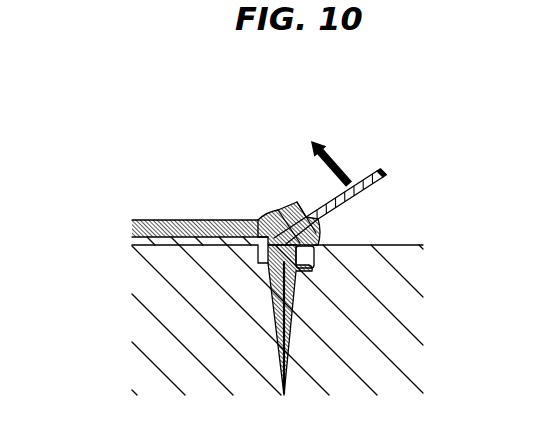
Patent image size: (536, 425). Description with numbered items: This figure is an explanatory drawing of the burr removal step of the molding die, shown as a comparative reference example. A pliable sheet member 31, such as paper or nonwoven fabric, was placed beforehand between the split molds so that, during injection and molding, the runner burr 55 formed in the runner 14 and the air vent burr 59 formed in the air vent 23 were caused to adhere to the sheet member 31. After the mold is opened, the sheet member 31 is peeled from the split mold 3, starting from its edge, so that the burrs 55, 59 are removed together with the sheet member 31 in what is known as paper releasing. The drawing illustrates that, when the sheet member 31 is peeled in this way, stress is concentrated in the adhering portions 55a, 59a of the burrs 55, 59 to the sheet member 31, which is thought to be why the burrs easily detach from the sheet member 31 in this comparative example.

The split mold 3 is at (180, 331).
The runner 14 is at (334, 260).
The air vent 23 is at (300, 279).
The sheet member 31 is at (369, 169).
The runner burr 55 is at (402, 321).
The air vent burr 59 is at (291, 309).
The adhering portion 55a is at (239, 178).
The adhering portion 59a is at (277, 228).